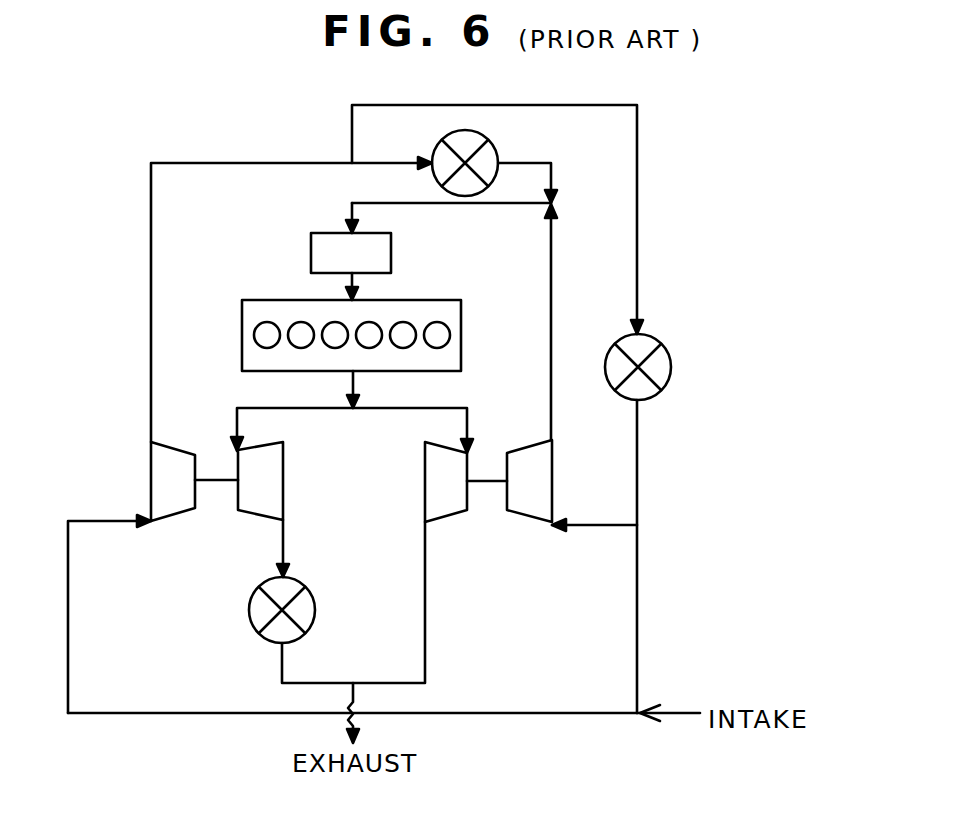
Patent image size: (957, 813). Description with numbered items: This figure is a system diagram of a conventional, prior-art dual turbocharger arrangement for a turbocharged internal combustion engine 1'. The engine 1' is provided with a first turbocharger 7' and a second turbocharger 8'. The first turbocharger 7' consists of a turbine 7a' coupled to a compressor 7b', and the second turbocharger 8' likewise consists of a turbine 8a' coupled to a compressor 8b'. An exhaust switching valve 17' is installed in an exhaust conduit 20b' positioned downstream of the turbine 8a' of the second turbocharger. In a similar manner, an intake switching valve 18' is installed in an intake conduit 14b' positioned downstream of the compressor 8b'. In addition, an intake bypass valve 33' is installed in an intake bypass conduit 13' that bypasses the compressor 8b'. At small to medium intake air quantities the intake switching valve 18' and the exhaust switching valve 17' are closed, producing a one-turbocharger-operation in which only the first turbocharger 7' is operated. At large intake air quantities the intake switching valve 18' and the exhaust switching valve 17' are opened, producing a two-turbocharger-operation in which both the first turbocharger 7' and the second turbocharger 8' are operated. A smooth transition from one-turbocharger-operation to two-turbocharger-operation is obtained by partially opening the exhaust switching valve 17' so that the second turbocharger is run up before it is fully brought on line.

The conventional turbocharged internal combustion engine 1' is at (376, 335).
The first turbocharger 7' is at (486, 459).
The turbine of the first turbocharger 7a' is at (409, 482).
The compressor of the first turbocharger 7b' is at (563, 474).
The second turbocharger 8' is at (214, 458).
The turbine of the second turbocharger 8a' is at (294, 481).
The compressor of the second turbocharger 8b' is at (137, 472).
The intake bypass conduit 13' is at (527, 409).
The intake conduit 14b' is at (291, 299).
The exhaust switching valve 17' is at (247, 581).
The intake switching valve 18' is at (454, 274).
The exhaust conduit 20b' is at (316, 632).
The intake bypass valve 33' is at (656, 342).